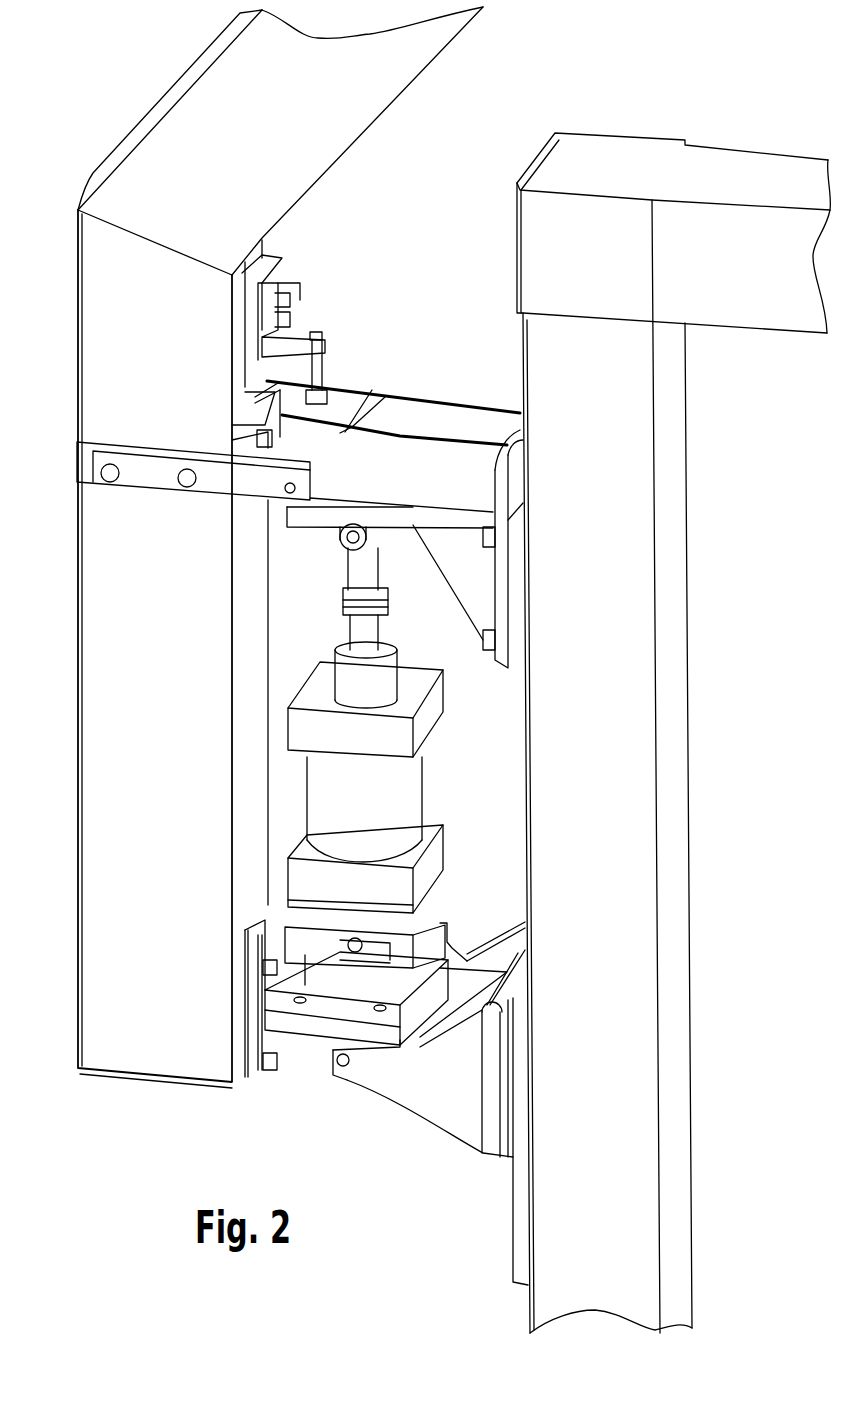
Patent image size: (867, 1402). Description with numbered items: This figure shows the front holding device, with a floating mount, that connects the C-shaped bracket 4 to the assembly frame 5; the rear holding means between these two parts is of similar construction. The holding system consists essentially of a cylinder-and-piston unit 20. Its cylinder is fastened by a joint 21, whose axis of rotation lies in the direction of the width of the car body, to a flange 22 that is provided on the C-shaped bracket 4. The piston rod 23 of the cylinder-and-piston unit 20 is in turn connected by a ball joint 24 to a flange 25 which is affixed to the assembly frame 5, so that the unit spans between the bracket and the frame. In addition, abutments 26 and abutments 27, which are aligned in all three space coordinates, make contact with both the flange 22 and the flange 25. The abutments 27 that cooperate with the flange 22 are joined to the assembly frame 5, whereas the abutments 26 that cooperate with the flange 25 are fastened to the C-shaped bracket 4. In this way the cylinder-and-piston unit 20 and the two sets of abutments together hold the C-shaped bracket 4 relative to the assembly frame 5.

The C-shaped bracket 4 is at (91, 737).
The assembly frame 5 is at (645, 990).
The cylinder-and-piston unit 20 is at (413, 790).
The joint 21 is at (323, 967).
The flange 22 is at (244, 1043).
The piston rod 23 is at (372, 638).
The ball joint 24 is at (353, 538).
The flange 25 is at (497, 457).
The abutments 26 is at (372, 390).
The abutments 27 is at (343, 1082).